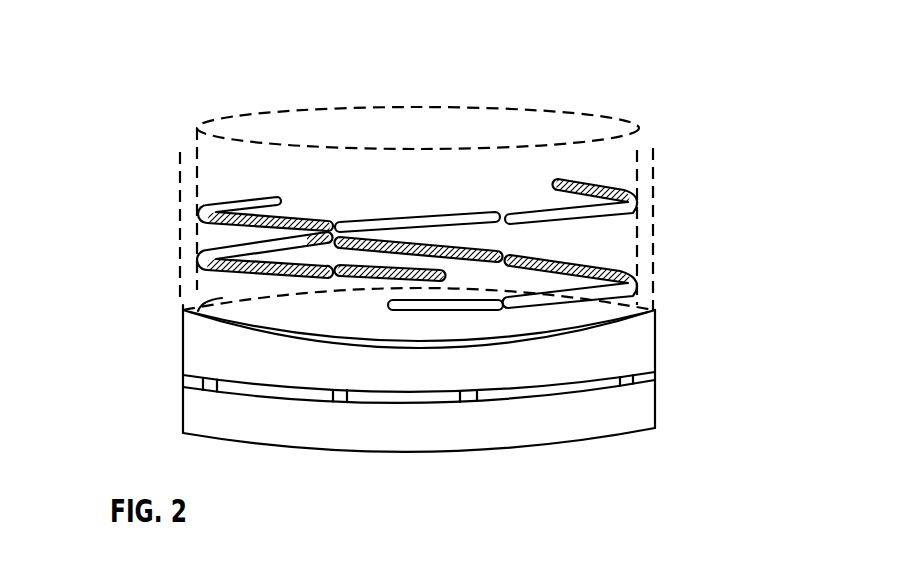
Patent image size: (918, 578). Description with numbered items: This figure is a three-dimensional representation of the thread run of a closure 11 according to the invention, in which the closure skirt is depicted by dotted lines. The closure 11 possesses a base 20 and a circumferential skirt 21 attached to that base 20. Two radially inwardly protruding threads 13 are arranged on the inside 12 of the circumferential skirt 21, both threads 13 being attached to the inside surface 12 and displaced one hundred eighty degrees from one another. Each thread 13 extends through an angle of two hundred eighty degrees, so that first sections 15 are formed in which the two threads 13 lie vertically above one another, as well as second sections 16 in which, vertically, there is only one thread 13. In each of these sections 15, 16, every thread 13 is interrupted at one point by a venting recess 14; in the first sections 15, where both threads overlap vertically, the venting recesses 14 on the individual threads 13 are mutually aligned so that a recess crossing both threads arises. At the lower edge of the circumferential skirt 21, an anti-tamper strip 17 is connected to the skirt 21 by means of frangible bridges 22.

The closure 11 is at (426, 269).
The inside of the circumferential skirt 12 is at (633, 172).
The thread 13 is at (207, 212).
The venting recess 14 is at (330, 223).
The first section 15 is at (367, 257).
The second section 16 is at (480, 245).
The anti-tamper strip 17 is at (200, 412).
The base 20 is at (401, 133).
The circumferential skirt 21 is at (183, 165).
The frangible bridges 22 is at (657, 382).